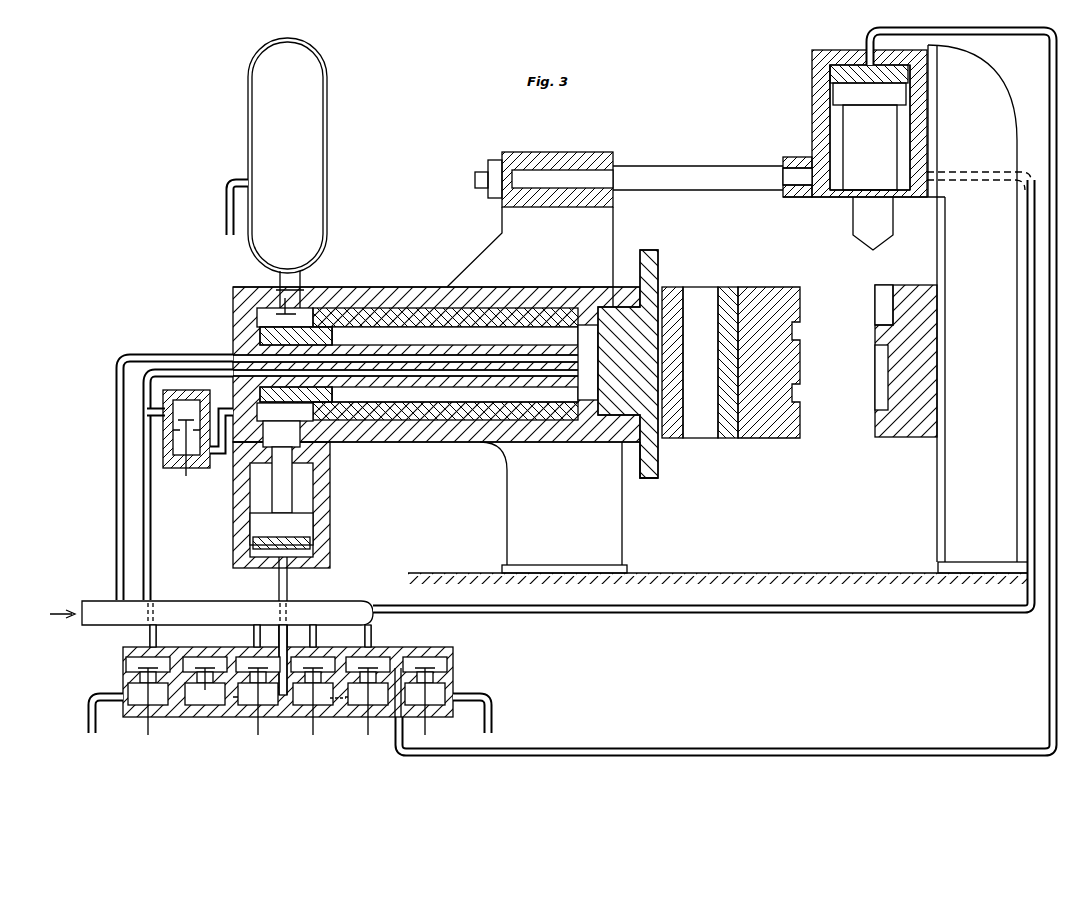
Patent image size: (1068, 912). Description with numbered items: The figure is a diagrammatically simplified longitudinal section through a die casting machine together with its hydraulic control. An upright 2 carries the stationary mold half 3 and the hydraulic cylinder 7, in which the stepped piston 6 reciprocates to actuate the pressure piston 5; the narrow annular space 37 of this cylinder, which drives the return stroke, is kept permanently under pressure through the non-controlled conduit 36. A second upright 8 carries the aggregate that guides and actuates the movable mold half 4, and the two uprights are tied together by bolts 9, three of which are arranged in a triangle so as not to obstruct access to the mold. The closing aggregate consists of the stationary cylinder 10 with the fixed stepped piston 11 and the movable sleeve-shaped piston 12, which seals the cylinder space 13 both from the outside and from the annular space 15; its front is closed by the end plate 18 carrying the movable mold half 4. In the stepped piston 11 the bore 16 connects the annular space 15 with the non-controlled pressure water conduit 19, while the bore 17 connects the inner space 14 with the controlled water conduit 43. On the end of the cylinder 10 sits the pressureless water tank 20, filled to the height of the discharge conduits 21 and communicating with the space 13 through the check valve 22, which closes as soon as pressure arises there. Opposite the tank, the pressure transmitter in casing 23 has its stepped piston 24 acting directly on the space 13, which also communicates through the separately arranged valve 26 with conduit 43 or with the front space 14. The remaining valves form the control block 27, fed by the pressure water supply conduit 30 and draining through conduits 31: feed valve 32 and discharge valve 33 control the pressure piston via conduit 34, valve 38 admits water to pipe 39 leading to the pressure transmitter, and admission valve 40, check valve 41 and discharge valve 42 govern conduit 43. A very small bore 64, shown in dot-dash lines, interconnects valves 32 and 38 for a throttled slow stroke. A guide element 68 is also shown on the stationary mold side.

The upright 2 is at (1013, 130).
The stationary mold half 3 is at (900, 438).
The movable mold half 4 is at (763, 440).
The pressure piston 5 is at (855, 226).
The stepped piston 6 is at (869, 127).
The hydraulic cylinder 7 is at (812, 102).
The upright 8 is at (622, 530).
The bolts 9 is at (712, 180).
The stationary cylinder 10 is at (383, 289).
The stepped piston 11 is at (432, 354).
The sleeve-shaped piston 12 is at (628, 322).
The cylinder space 13 is at (285, 412).
The inner space 14 is at (588, 362).
The annular space 15 is at (419, 402).
The bore 16 is at (386, 358).
The bore 17 is at (400, 374).
The end plate 18 is at (660, 458).
The non-controlled pressure water conduit 19 is at (118, 462).
The pressureless water tank 20 is at (318, 128).
The discharge conduits 21 is at (226, 213).
The check valve 22 is at (277, 300).
The casing 23 is at (331, 500).
The stepped piston 24 is at (298, 500).
The valve 26 is at (194, 468).
The control block 27 is at (283, 720).
The pressure water supply conduit 30 is at (190, 602).
The discharge conduits 31 is at (490, 715).
The feed valve 32 is at (364, 700).
The discharge valve 33 is at (421, 700).
The conduit 34 is at (703, 750).
The non-controlled conduit 36 is at (712, 614).
The narrow annular space 37 is at (835, 130).
The valve 38 is at (308, 700).
The pipe 39 is at (288, 584).
The admission valve 40 is at (255, 700).
The check valve 41 is at (200, 700).
The discharge valve 42 is at (149, 700).
The controlled water conduit 43 is at (152, 507).
The bore 64 is at (340, 705).
The guide 68 is at (880, 312).